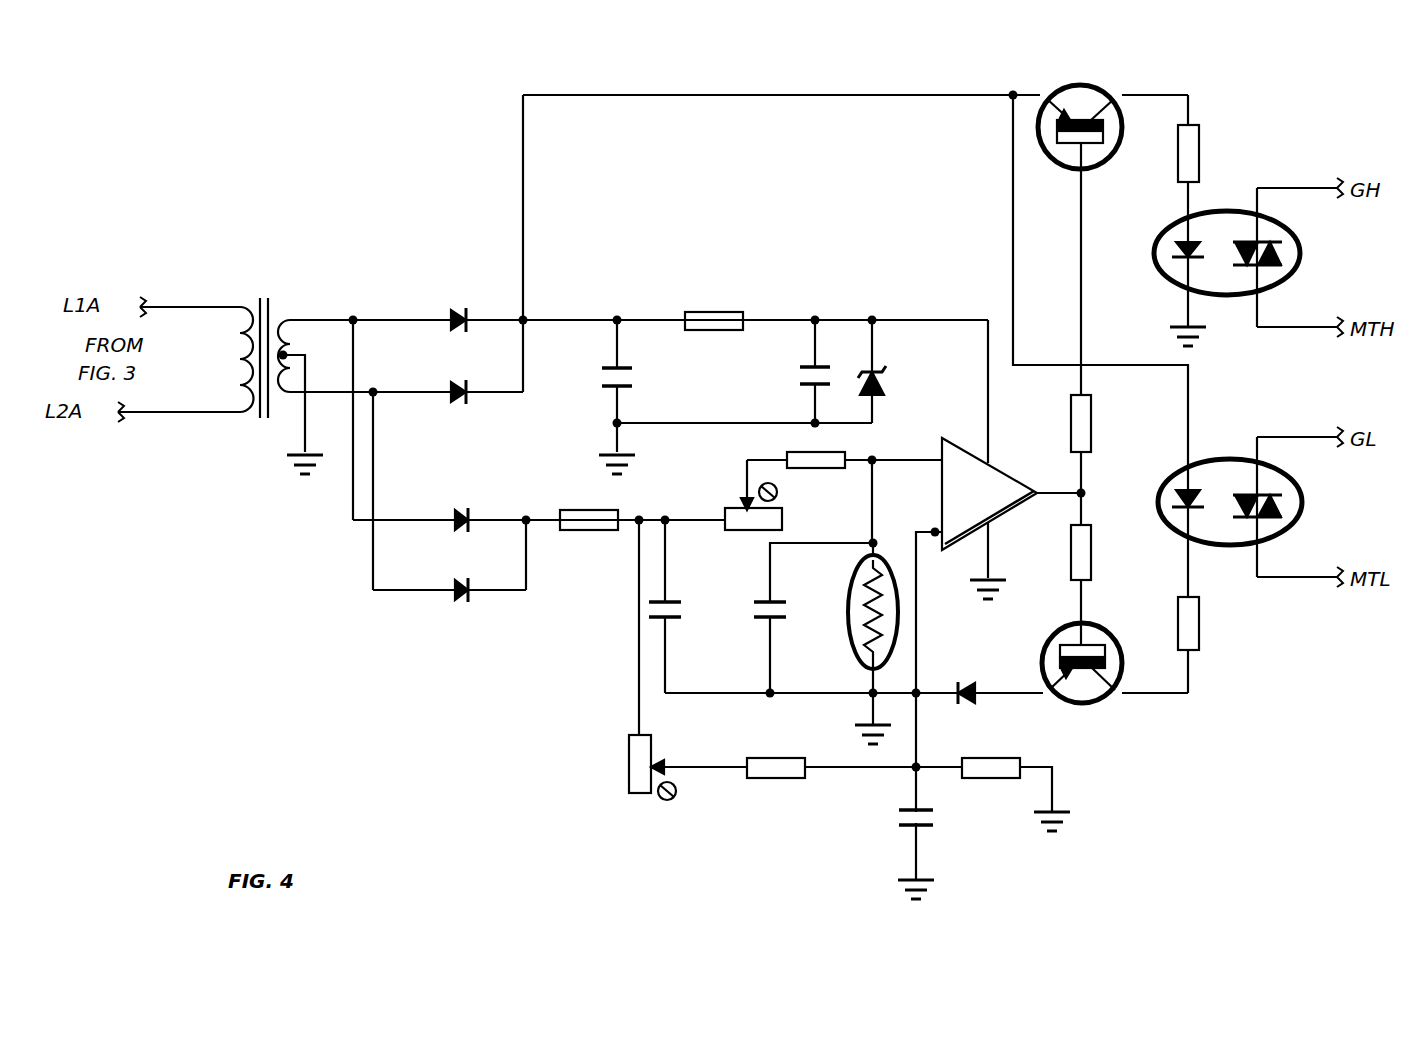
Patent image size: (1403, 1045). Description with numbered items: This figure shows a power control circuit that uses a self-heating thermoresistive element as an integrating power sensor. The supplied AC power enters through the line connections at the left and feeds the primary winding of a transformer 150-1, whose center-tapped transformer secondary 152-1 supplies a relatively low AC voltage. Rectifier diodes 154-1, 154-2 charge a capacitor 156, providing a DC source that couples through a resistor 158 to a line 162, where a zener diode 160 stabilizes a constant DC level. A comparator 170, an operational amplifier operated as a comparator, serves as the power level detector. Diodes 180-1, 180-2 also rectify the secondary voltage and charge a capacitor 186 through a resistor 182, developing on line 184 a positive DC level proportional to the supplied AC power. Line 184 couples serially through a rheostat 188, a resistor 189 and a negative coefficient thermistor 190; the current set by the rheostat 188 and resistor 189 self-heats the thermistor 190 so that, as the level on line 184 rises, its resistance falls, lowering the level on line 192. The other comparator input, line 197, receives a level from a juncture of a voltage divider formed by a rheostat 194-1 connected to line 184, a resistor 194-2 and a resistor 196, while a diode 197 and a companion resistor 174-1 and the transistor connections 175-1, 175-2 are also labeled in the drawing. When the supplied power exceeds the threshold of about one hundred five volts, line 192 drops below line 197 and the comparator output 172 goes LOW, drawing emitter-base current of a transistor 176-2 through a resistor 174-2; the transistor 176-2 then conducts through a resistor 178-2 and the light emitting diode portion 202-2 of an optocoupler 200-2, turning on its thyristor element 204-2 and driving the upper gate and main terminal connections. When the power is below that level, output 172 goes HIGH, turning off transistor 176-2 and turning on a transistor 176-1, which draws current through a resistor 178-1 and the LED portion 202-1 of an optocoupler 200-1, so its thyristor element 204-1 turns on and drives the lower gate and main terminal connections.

The transformer 150-1 is at (270, 299).
The transformer secondary 152-1 is at (300, 342).
The rectifier diode 154-1 is at (459, 305).
The rectifier diode 154-2 is at (452, 385).
The capacitor 156 is at (600, 372).
The resistor 158 is at (736, 288).
The zener diode 160 is at (892, 378).
The line 162 is at (950, 298).
The comparator 170 is at (1032, 447).
The comparator output 172 is at (1127, 478).
The resistor 174-1 is at (1137, 550).
The resistor 174-2 is at (1137, 410).
The transistor lead 175-1 is at (1078, 597).
The transistor lead 175-2 is at (1088, 236).
The transistor 176-1 is at (1092, 705).
The transistor 176-2 is at (1112, 92).
The resistor 178-1 is at (1237, 628).
The resistor 178-2 is at (1207, 153).
The diode 180-1 is at (452, 512).
The diode 180-2 is at (452, 583).
The resistor 182 is at (580, 508).
The line 184 is at (668, 512).
The capacitor 186 is at (688, 612).
The rheostat 188 is at (735, 534).
The resistor 189 is at (783, 458).
The negative coefficient thermistor 190 is at (846, 600).
The line 192 is at (915, 457).
The rheostat 194-1 is at (626, 747).
The resistor 194-2 is at (762, 754).
The resistor 196 is at (1006, 754).
The line 197 is at (922, 640).
The optocoupler 200-1 is at (1228, 458).
The optocoupler 200-2 is at (1230, 210).
The light emitting diode portion 202-1 is at (1178, 516).
The light emitting diode portion 202-2 is at (1178, 265).
The thyristor element 204-1 is at (1285, 506).
The thyristor element 204-2 is at (1285, 256).